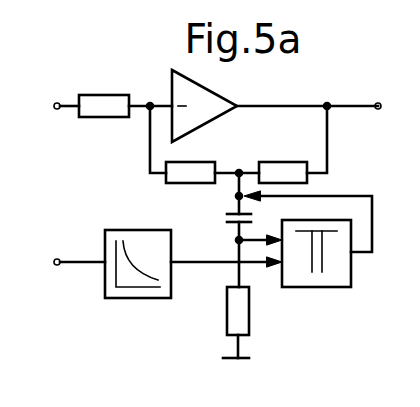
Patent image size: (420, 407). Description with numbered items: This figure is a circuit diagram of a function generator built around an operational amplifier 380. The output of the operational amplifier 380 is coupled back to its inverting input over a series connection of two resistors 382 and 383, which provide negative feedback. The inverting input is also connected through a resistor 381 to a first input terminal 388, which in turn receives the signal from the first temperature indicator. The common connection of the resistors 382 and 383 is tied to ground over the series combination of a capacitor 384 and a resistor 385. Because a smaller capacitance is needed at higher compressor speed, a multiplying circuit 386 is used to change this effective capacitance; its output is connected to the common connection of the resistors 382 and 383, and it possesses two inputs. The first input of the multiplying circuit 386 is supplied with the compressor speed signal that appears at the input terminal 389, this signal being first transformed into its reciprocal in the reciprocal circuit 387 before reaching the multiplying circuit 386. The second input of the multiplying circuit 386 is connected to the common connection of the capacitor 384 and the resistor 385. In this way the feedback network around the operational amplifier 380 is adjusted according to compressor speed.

The operational amplifier 380 is at (212, 97).
The resistor 381 is at (106, 89).
The resistor 382 is at (186, 184).
The resistor 383 is at (277, 162).
The capacitor 384 is at (227, 217).
The resistor 385 is at (249, 315).
The multiplying circuit 386 is at (302, 281).
The reciprocal circuit 387 is at (130, 238).
The first input terminal 388 is at (57, 119).
The input terminal 389 is at (57, 258).